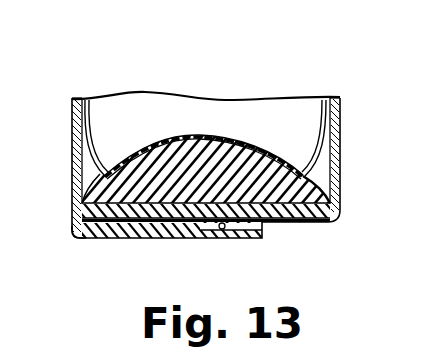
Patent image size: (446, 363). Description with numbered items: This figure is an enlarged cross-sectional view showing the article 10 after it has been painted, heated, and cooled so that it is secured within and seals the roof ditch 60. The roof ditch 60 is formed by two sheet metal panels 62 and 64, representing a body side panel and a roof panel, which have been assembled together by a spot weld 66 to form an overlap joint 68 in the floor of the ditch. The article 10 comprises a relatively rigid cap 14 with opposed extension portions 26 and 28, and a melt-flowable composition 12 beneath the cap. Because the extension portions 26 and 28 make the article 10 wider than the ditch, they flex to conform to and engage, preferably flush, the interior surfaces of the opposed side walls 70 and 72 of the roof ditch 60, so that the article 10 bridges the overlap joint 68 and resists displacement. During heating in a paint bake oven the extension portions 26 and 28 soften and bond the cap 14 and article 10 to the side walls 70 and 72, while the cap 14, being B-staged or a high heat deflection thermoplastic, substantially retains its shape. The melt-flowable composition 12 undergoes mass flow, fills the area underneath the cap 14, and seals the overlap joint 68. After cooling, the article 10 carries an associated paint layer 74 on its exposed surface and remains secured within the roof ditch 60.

The article 10 is at (175, 134).
The melt-flowable composition 12 is at (84, 220).
The cap 14 is at (203, 134).
The extension portion 26 is at (312, 175).
The extension portion 28 is at (100, 172).
The roof ditch 60 is at (258, 96).
The sheet metal panel 62 is at (79, 240).
The sheet metal panel 64 is at (335, 218).
The spot weld 66 is at (221, 230).
The overlap joint 68 is at (268, 230).
The side wall 70 is at (77, 98).
The side wall 72 is at (334, 98).
The paint layer 74 is at (236, 134).